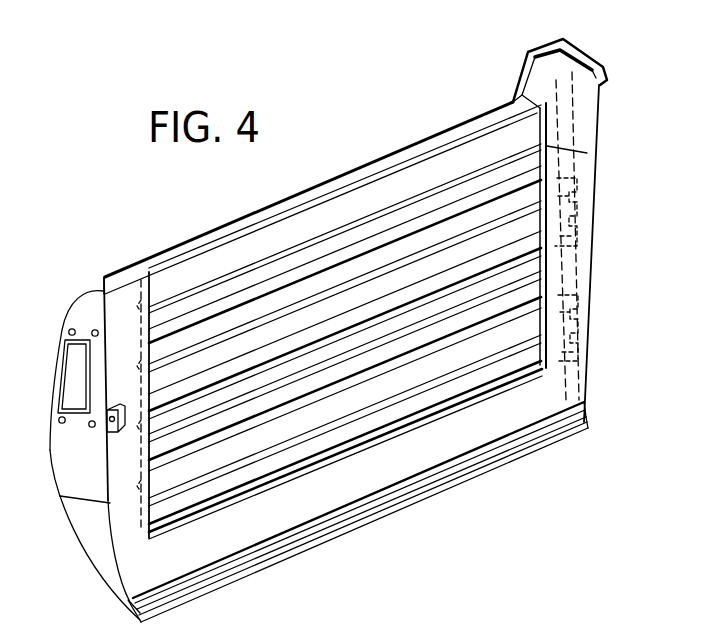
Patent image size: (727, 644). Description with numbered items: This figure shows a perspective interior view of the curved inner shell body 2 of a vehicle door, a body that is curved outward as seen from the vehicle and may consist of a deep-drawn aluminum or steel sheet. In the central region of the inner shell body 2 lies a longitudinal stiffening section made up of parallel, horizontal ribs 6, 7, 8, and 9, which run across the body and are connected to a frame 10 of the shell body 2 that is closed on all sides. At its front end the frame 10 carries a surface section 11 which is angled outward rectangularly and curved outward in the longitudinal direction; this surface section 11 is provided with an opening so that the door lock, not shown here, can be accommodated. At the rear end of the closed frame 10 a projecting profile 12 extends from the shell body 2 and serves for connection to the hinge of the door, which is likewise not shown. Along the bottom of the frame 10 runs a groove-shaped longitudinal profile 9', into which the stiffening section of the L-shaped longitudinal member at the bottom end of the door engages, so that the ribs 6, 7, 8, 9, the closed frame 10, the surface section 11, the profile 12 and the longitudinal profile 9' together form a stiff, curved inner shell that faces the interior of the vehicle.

The inner shell body 2 is at (64, 268).
The horizontal rib 6 is at (323, 410).
The horizontal rib 7 is at (385, 316).
The horizontal rib 8 is at (376, 253).
The horizontal rib 9 is at (358, 519).
The groove-shaped longitudinal profile 9' is at (359, 502).
The frame 10 is at (82, 543).
The surface section 11 is at (70, 378).
The projecting profile 12 is at (594, 62).